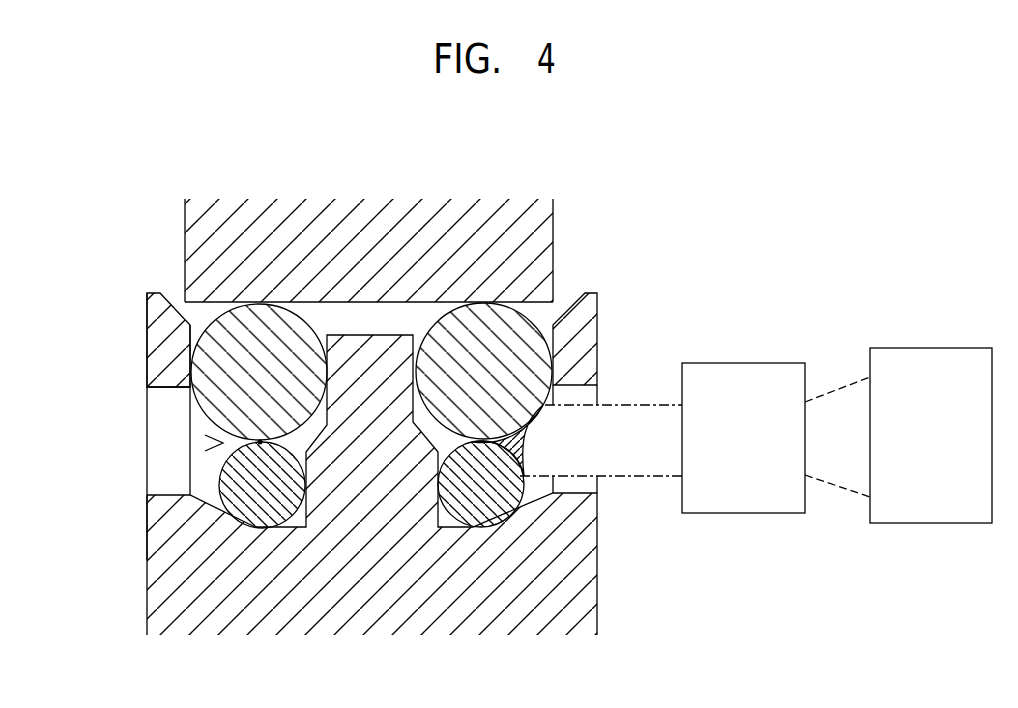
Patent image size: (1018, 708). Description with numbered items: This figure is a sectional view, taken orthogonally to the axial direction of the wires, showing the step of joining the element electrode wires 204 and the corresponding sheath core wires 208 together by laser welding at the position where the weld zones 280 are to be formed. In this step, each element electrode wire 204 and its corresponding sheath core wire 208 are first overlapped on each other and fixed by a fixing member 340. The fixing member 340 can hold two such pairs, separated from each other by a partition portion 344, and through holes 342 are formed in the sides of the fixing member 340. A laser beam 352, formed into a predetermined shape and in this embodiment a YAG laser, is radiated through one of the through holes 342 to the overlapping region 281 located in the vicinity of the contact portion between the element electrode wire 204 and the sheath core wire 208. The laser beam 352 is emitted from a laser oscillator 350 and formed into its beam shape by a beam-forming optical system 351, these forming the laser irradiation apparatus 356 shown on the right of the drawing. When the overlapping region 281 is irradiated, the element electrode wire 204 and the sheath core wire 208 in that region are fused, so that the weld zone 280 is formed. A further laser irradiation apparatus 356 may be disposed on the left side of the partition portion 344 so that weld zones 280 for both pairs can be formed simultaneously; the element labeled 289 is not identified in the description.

The fixing member 340 is at (145, 318).
The partition portion 344 is at (413, 303).
The through hole 342 is at (177, 435).
The sheath core wire 208 is at (190, 407).
The bottom surface 289 is at (190, 490).
The element electrode wire 204 is at (147, 493).
The overlapping region 281 is at (203, 441).
The weld zone 280 is at (527, 445).
The laser beam 352 is at (620, 405).
The laser irradiation apparatus 356 is at (837, 379).
The beam-forming optical system 351 is at (737, 363).
The laser oscillator 350 is at (931, 406).